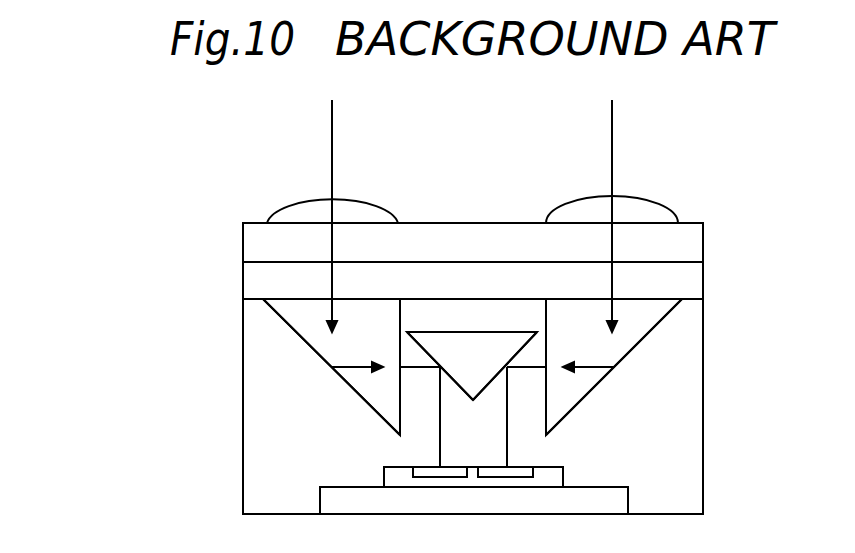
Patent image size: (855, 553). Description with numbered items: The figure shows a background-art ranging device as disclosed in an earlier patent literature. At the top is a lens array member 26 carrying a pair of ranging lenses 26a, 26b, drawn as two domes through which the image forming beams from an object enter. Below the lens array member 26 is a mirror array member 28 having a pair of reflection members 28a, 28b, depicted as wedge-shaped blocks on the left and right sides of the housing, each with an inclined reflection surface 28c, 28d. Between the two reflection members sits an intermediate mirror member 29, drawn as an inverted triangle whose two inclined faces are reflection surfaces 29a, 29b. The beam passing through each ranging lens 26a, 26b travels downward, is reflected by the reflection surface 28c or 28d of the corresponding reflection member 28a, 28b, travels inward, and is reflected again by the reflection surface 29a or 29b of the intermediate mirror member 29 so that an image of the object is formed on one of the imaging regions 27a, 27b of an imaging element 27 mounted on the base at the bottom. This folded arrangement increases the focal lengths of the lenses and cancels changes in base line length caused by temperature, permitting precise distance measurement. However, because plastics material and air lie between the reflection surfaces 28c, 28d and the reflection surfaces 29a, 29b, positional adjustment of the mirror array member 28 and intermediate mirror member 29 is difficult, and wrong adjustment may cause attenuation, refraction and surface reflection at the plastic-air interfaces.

The lens array member 26 is at (232, 240).
The ranging lens 26a is at (302, 207).
The ranging lens 26b is at (660, 207).
The imaging element 27 is at (362, 464).
The imaging region 27a is at (428, 467).
The imaging region 27b is at (524, 465).
The mirror array member 28 is at (232, 283).
The reflection member 28a is at (308, 326).
The reflection member 28b is at (640, 322).
The reflection surface 28c is at (360, 398).
The reflection surface 28d is at (591, 390).
The intermediate mirror member 29 is at (460, 338).
The reflection surface 29a is at (424, 353).
The reflection surface 29b is at (522, 355).